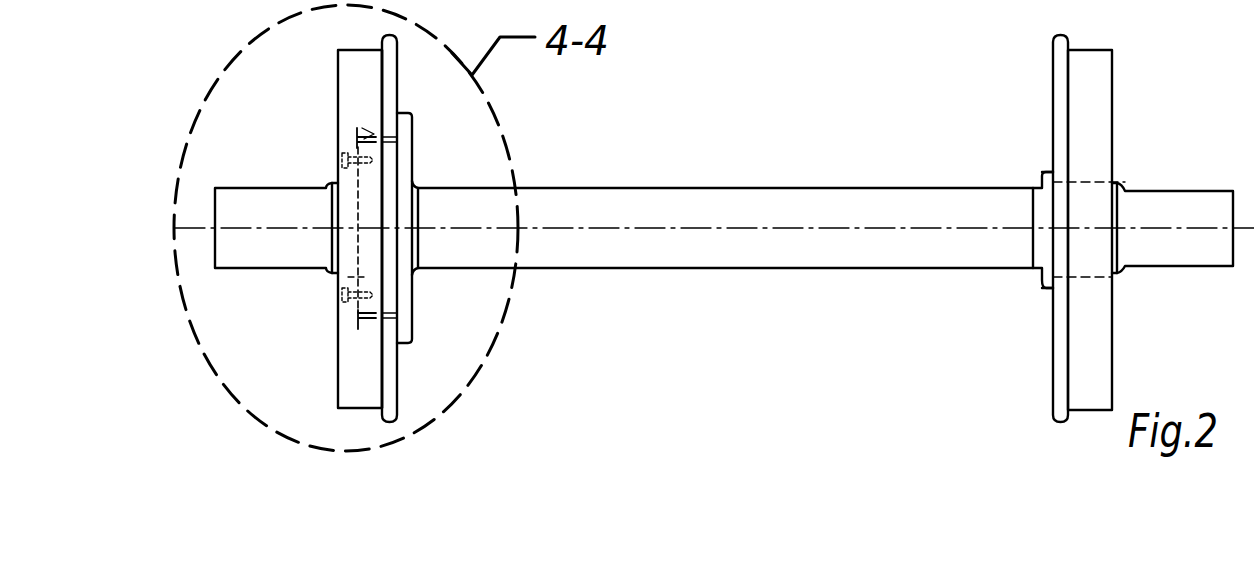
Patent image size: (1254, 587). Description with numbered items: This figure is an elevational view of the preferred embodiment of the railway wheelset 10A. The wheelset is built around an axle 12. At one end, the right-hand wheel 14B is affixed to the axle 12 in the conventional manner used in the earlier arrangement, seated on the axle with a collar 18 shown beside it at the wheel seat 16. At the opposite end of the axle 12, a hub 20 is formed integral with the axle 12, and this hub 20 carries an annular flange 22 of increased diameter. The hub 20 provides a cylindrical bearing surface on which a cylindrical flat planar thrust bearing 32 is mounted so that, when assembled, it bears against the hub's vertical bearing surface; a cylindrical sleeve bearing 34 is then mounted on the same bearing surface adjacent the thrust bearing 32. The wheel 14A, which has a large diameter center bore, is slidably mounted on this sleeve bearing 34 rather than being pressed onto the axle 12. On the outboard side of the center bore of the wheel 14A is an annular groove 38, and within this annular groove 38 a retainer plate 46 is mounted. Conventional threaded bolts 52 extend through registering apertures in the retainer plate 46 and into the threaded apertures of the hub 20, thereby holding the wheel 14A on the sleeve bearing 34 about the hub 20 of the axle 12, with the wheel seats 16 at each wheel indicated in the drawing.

The wheelset assembly 10A is at (797, 112).
The axle 12 is at (893, 187).
The wheel 14A is at (338, 75).
The right-hand wheel 14B is at (1055, 62).
The wheel seat 16 is at (413, 185).
The collar 18 is at (1040, 173).
The hub 20 is at (373, 264).
The annular flange 22 is at (412, 117).
The thrust bearing 32 is at (383, 134).
The sleeve bearing 34 is at (372, 112).
The annular groove 38 is at (338, 201).
The retainer plate 46 is at (350, 133).
The threaded bolts 52 is at (340, 156).